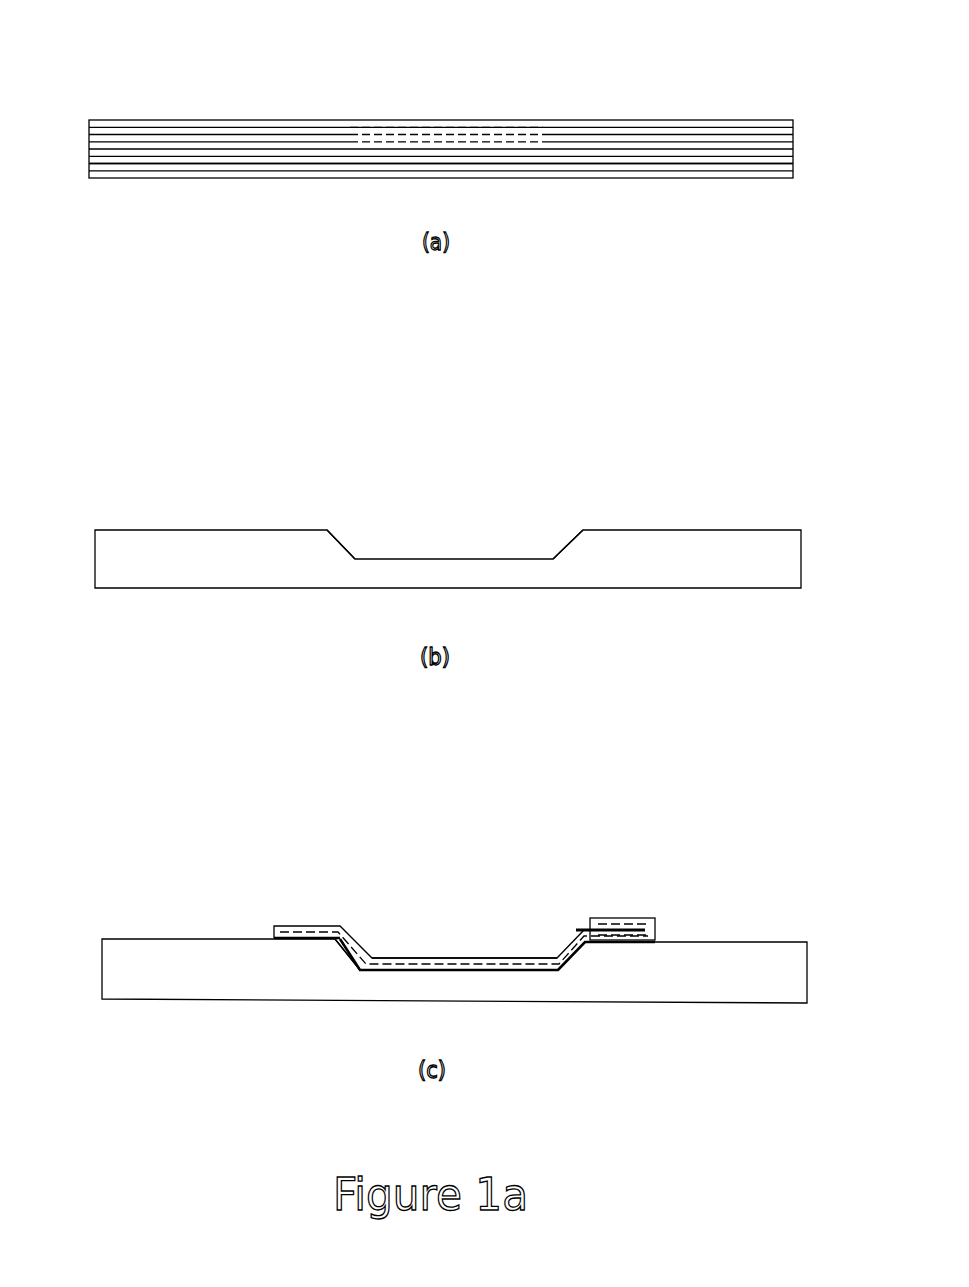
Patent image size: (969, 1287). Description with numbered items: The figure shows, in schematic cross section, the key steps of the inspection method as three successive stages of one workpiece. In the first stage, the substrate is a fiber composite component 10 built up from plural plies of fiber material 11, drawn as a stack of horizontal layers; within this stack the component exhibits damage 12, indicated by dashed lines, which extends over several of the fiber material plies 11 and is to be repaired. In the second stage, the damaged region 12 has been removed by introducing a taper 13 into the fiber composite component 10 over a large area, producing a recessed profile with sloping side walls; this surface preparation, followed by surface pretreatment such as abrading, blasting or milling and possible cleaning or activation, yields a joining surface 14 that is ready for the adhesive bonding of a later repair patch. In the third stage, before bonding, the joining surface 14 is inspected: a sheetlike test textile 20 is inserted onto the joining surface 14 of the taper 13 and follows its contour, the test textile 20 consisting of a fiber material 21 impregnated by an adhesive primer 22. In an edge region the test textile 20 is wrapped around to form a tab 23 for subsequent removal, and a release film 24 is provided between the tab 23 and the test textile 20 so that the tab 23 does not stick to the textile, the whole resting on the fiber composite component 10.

The fiber composite component 10 is at (732, 95).
The fiber material plies 11 is at (772, 152).
The damage 12 is at (450, 125).
The taper 13 is at (558, 535).
The joining surface 14 is at (400, 548).
The sheetlike test textile 20 is at (317, 903).
The fiber material 21 is at (423, 965).
The adhesive primer 22 is at (497, 960).
The tab 23 is at (630, 910).
The release film 24 is at (578, 928).